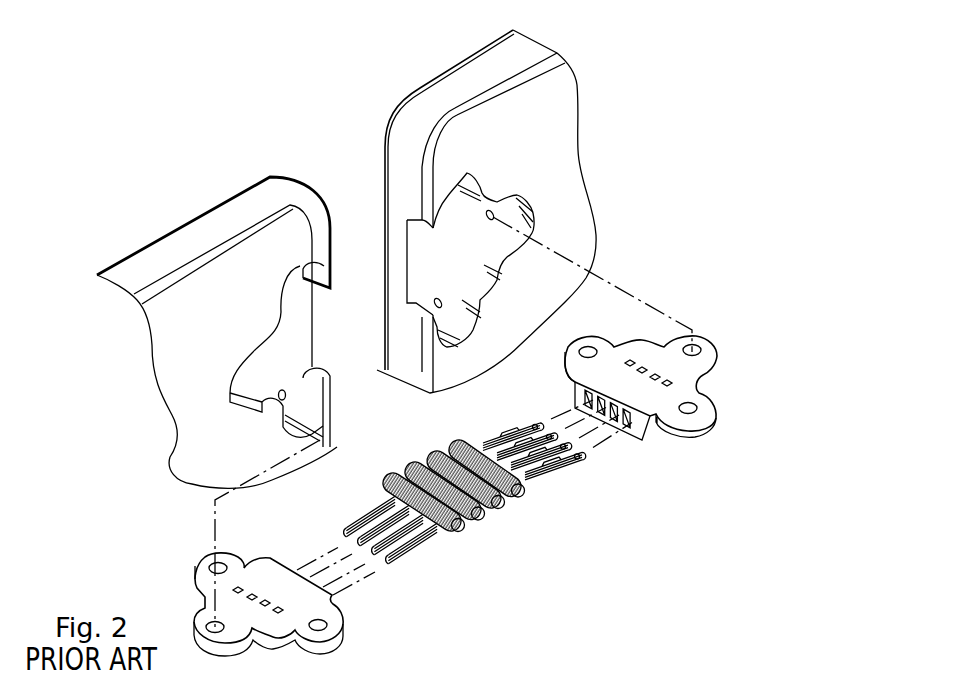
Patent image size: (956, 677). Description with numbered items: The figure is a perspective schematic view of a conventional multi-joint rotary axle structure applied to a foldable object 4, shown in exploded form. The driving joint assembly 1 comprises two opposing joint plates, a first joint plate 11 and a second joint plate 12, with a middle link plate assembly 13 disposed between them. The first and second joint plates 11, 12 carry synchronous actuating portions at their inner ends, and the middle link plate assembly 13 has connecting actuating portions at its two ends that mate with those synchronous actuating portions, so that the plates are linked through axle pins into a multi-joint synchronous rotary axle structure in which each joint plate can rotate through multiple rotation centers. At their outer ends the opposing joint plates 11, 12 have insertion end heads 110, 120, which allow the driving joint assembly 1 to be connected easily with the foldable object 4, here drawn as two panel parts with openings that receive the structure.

The driving joint assembly 1 is at (483, 521).
The foldable object 4 is at (238, 210).
The first joint plate 11 is at (552, 467).
The insertion end head 110 is at (578, 462).
The second joint plate 12 is at (405, 552).
The insertion end head 120 is at (393, 560).
The middle link plate assembly 13 is at (477, 510).